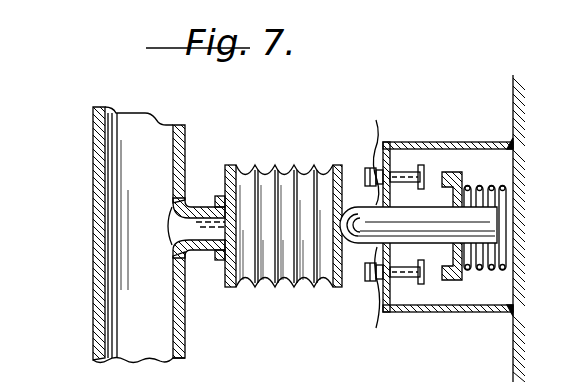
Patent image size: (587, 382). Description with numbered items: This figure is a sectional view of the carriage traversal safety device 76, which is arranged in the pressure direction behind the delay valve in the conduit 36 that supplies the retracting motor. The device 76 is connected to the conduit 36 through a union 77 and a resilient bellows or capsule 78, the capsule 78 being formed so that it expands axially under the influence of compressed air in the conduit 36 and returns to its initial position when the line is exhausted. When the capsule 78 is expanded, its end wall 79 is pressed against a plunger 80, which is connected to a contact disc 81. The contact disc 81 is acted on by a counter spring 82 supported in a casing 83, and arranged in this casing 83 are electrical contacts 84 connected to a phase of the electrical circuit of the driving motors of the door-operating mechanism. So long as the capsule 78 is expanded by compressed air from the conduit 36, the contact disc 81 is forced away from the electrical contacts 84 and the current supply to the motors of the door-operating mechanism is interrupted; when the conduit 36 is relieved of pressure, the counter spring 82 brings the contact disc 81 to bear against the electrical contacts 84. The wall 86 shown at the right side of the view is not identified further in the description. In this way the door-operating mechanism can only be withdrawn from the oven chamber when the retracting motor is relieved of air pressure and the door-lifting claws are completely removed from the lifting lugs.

The conduit 36 is at (100, 153).
The carriage traversal safety device 76 is at (280, 325).
The union 77 is at (193, 208).
The resilient bellows or capsule 78 is at (264, 176).
The end wall 79 is at (337, 163).
The plunger 80 is at (357, 246).
The contact disc 81 is at (449, 170).
The counter spring 82 is at (481, 183).
The casing 83 is at (503, 308).
The electrical contacts 84 is at (402, 175).
The wall 86 is at (426, 228).